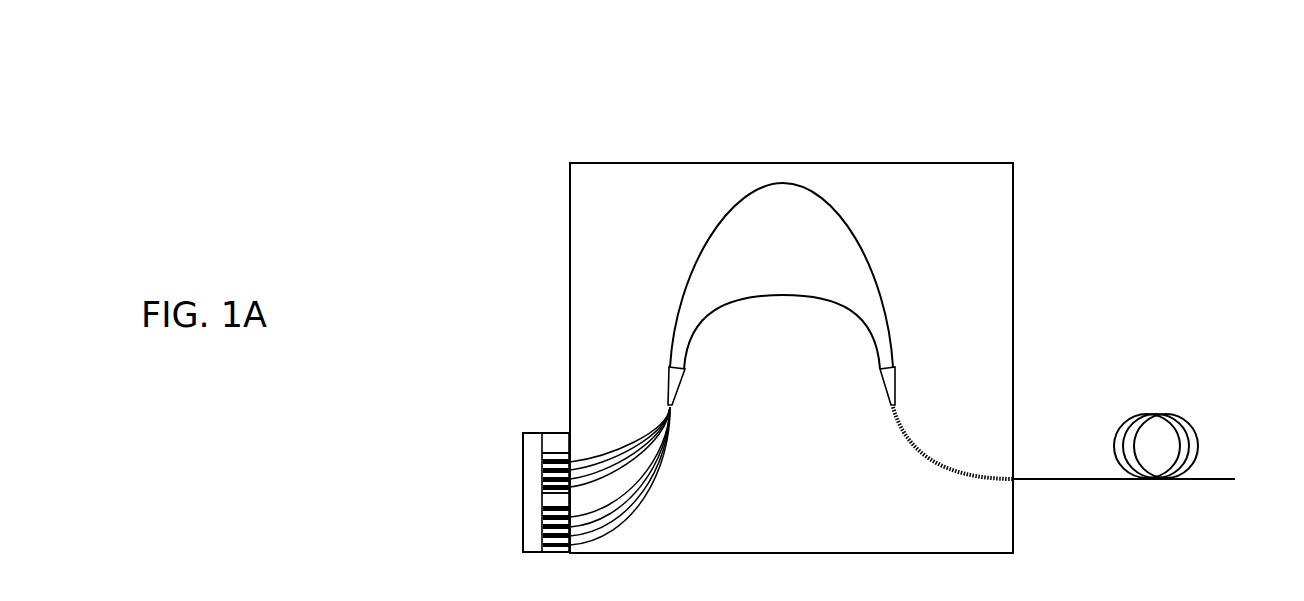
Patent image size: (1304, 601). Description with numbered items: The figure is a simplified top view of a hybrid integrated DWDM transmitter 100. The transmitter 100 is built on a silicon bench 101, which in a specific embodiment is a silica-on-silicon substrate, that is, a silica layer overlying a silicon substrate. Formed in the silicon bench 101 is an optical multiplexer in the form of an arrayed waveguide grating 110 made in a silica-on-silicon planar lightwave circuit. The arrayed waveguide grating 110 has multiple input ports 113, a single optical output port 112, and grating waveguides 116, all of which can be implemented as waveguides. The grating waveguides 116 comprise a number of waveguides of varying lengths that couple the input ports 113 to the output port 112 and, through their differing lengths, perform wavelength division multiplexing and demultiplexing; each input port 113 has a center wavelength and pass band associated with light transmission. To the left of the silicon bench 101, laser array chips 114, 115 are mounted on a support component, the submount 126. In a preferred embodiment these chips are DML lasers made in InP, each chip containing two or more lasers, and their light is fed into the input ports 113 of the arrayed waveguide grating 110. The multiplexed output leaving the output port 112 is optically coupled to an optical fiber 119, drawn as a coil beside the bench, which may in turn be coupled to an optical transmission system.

The hybrid integrated DWDM transmitter 100 is at (1135, 130).
The silicon bench 101 is at (1024, 275).
The arrayed waveguide grating 110 is at (895, 239).
The optical output port 112 is at (921, 464).
The input ports 113 is at (624, 446).
The laser array chip 114 is at (541, 447).
The laser array chip 115 is at (541, 501).
The grating waveguides 116 is at (700, 257).
The optical fiber 119 is at (1170, 403).
The submount 126 is at (521, 517).